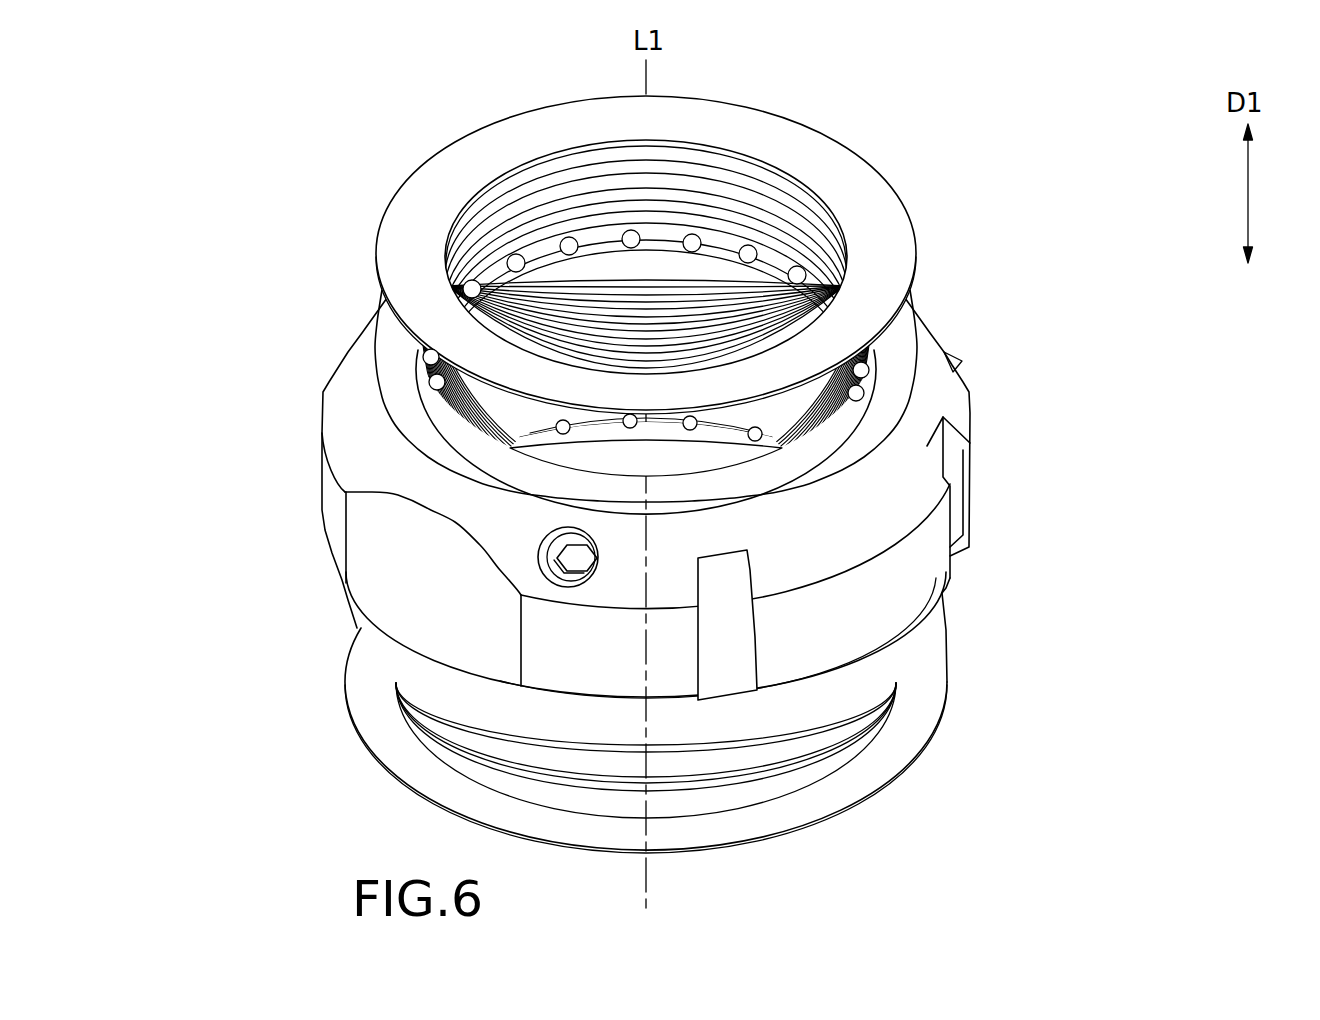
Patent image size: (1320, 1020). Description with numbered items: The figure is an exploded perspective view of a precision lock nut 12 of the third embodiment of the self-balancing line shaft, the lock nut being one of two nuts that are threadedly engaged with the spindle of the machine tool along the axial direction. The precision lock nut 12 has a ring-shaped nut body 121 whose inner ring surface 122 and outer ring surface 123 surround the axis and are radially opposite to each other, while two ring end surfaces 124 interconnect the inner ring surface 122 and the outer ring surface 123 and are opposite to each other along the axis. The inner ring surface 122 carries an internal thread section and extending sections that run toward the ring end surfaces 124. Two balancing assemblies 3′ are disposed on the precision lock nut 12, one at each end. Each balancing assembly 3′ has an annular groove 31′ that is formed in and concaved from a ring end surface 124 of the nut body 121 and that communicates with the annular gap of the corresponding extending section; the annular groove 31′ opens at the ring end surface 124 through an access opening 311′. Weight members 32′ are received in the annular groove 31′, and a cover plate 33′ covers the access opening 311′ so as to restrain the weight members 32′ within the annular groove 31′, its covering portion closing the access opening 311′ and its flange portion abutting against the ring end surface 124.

The balancing assembly 3′ is at (899, 169).
The cover plate 33′ is at (395, 195).
The weight members 32′ is at (509, 254).
The annular groove 31′ is at (435, 372).
The access opening 311′ is at (646, 449).
The precision lock nut 12 is at (1017, 230).
The nut body 121 is at (968, 400).
The inner ring surface 122 is at (857, 378).
The outer ring surface 123 is at (930, 540).
The ring end surface 124 is at (420, 412).